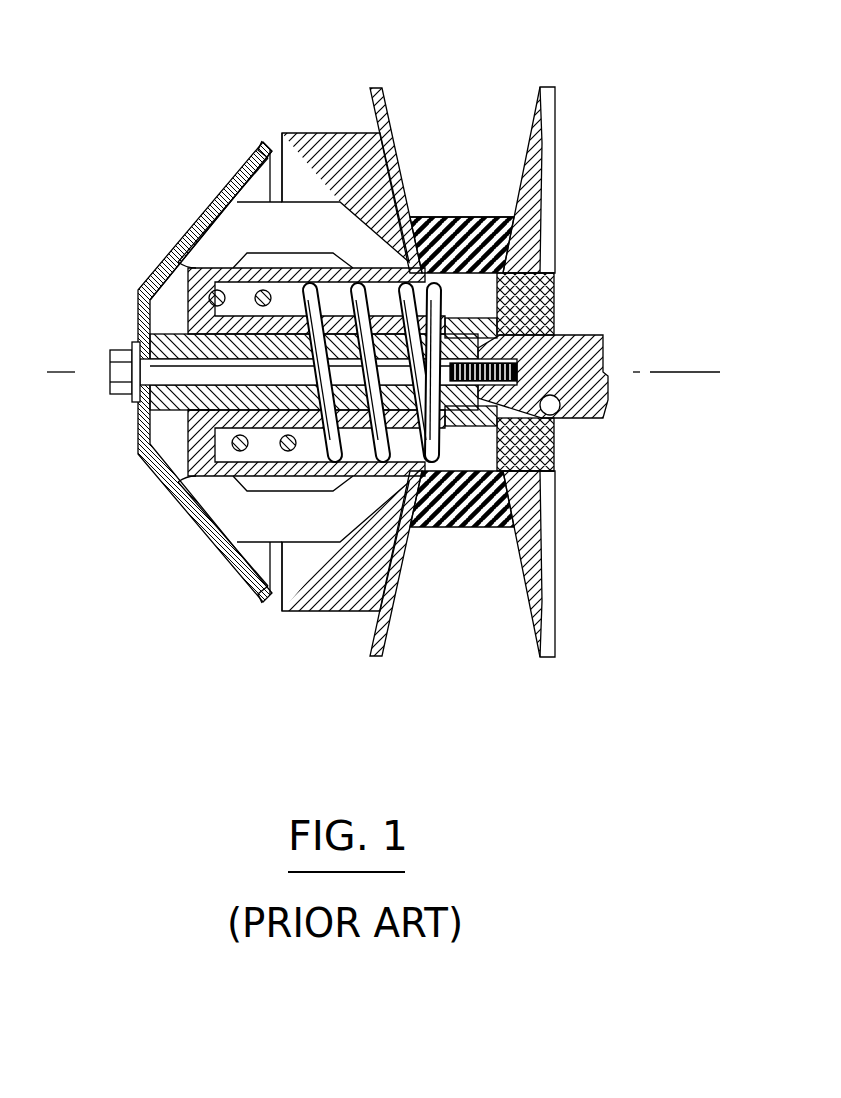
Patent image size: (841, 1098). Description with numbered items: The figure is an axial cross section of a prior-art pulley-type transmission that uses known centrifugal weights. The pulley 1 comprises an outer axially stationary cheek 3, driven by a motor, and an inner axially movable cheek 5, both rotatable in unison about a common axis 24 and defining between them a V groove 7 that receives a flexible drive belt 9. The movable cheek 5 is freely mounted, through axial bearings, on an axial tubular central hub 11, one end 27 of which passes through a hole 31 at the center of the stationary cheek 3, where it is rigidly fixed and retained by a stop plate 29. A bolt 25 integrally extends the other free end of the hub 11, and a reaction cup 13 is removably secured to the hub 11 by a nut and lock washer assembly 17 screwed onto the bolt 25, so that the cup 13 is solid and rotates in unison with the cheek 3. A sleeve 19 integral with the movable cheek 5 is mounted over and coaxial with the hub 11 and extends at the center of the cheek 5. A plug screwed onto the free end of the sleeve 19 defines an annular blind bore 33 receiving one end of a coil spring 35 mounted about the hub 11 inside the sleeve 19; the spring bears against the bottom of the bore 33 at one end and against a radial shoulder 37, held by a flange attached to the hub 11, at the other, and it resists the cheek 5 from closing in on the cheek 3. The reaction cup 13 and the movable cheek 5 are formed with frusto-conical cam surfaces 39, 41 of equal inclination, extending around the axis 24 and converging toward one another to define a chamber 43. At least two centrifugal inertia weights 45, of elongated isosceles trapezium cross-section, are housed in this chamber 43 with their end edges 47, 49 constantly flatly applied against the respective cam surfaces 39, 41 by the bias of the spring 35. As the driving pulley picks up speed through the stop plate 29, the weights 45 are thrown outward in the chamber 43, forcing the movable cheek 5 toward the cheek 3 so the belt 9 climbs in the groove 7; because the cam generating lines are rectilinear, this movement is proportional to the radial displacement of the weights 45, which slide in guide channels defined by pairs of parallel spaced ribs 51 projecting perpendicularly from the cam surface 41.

The pulley 1 is at (558, 122).
The outer axially stationary cheek 3 is at (542, 187).
The inner axially movable cheek 5 is at (372, 100).
The V groove 7 is at (461, 117).
The flexible drive belt 9 is at (470, 216).
The axial tubular central hub 11 is at (140, 416).
The reaction cup 13 is at (200, 521).
The nut and lock washer assembly 17 is at (107, 388).
The sleeve 19 is at (196, 418).
The axis 24 is at (673, 372).
The bolt 25 is at (542, 258).
The end of the hub 27 is at (553, 292).
The stop plate 29 is at (600, 335).
The hole 31 is at (558, 412).
The annular blind bore 33 is at (200, 468).
The coil spring 35 is at (292, 446).
The radial shoulder 37 is at (437, 317).
The frusto-conical cam surface 39 is at (197, 250).
The frusto-conical cam surface 41 is at (273, 160).
The chamber 43 is at (262, 150).
The centrifugal inertia weights 45 is at (237, 216).
The end edge 47 is at (200, 217).
The end edge 49 is at (402, 193).
The parallel spaced ribs 51 is at (282, 582).